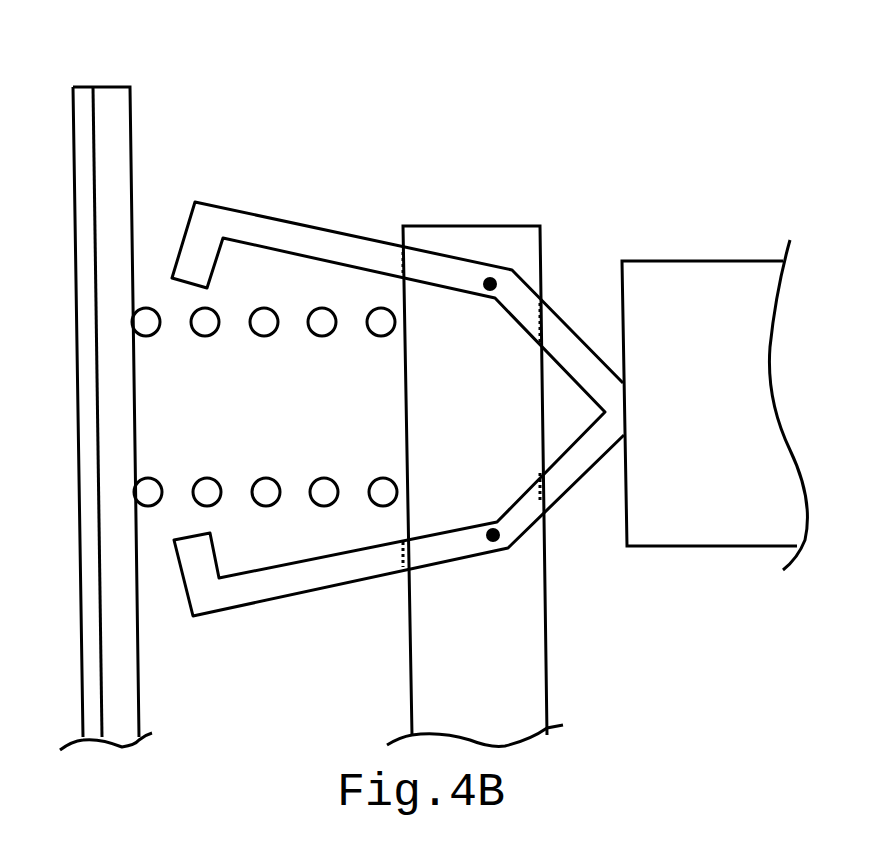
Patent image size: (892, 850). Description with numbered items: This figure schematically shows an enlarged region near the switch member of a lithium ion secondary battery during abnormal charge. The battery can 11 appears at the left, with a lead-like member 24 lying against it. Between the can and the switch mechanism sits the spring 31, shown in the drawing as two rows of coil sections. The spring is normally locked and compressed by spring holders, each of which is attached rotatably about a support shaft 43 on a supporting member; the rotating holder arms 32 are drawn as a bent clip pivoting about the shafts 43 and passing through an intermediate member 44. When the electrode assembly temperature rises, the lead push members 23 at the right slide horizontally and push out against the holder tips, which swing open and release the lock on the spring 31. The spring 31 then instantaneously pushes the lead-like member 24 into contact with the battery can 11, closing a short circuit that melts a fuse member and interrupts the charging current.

The battery can 11 is at (83, 93).
The lead-like member 24 is at (120, 118).
The spring 31 is at (147, 308).
The spring clip 32 is at (327, 237).
The support shaft 43 is at (491, 280).
The support member 44 is at (420, 694).
The lead push members 23 is at (714, 535).